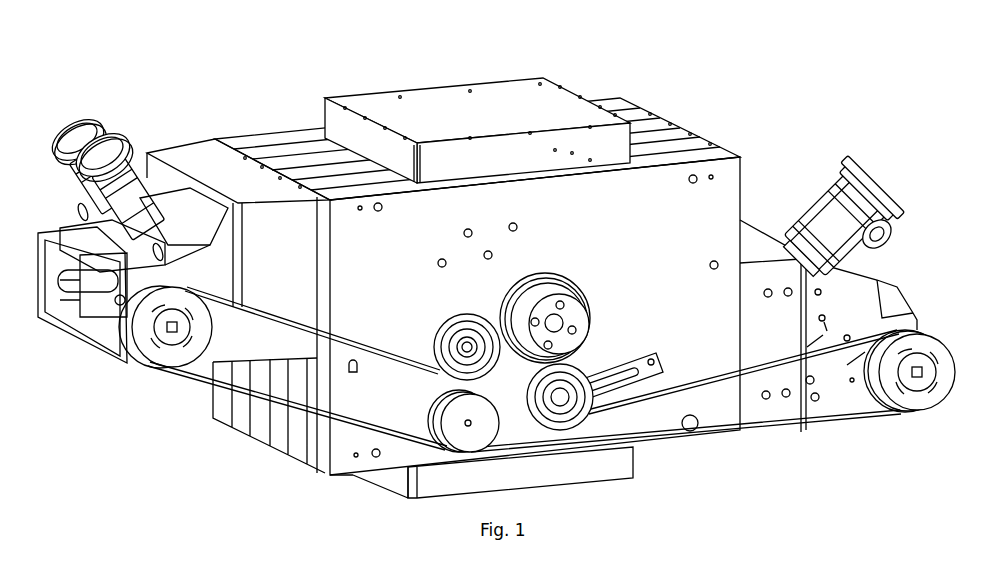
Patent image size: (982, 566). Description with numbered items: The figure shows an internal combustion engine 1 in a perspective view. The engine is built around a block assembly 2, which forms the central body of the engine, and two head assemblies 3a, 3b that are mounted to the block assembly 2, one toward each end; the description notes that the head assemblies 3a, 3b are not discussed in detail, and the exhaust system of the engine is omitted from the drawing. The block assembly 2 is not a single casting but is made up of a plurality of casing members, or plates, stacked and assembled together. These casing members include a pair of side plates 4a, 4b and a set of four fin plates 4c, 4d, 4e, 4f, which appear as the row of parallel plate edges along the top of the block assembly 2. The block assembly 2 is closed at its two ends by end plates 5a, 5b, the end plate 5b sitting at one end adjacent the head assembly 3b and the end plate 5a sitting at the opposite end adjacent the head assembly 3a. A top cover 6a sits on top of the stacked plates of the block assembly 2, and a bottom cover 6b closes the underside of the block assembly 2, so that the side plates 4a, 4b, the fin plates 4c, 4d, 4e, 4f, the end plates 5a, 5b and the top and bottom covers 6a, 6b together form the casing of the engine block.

The internal combustion engine 1 is at (562, 80).
The block assembly 2 is at (511, 116).
The head assembly 3a is at (862, 303).
The head assembly 3b is at (200, 245).
The side plate 4a is at (628, 103).
The side plate 4b is at (727, 155).
The fin plate 4c is at (648, 120).
The fin plate 4d is at (668, 130).
The fin plate 4e is at (688, 143).
The fin plate 4f is at (705, 150).
The end plate 5a is at (758, 277).
The end plate 5b is at (213, 157).
The top cover 6a is at (442, 98).
The bottom cover 6b is at (548, 470).